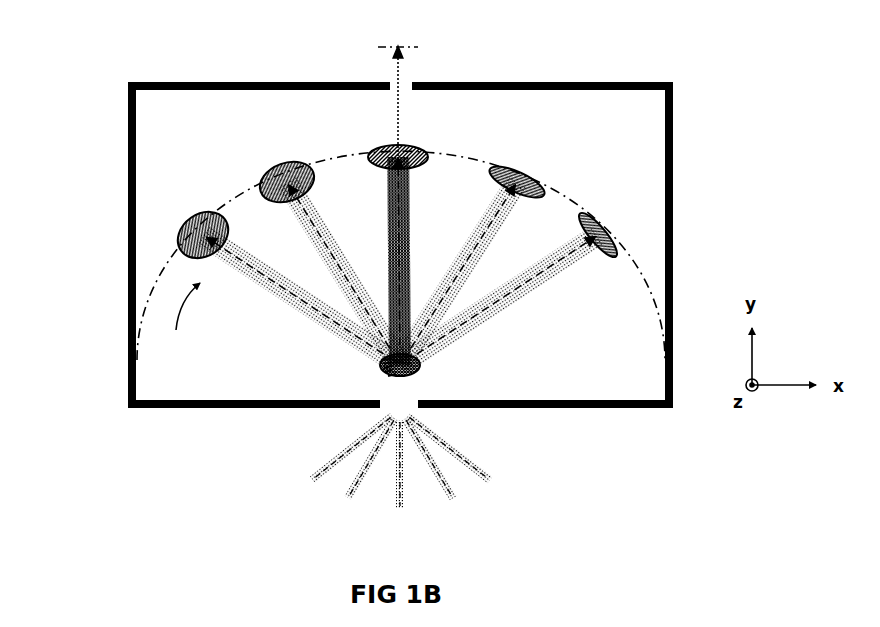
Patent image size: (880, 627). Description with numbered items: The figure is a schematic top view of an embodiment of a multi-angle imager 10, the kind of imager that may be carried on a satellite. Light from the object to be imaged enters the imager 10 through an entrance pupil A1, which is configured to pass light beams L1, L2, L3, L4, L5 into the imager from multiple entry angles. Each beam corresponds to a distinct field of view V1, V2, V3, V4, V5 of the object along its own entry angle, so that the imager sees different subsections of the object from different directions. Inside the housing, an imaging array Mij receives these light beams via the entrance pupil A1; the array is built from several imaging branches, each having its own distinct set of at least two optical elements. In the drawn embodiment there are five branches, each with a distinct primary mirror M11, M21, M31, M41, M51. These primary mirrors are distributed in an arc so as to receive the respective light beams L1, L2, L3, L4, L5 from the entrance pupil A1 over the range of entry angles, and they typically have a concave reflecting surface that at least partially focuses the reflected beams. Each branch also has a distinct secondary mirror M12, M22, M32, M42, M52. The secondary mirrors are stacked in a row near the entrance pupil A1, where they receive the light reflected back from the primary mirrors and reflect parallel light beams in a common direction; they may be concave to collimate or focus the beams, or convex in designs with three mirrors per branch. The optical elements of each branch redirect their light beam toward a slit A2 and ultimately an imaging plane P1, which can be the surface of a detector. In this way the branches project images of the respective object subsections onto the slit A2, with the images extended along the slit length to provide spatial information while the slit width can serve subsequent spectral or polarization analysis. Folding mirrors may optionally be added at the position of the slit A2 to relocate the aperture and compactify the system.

The multi-angle imager 10 is at (84, 144).
The entrance pupil A1 is at (412, 428).
The slit A2 is at (429, 112).
The imaging plane P1 is at (372, 47).
The primary mirror M11 is at (193, 230).
The primary mirror M21 is at (282, 174).
The primary mirror M31 is at (386, 148).
The primary mirror M41 is at (517, 176).
The primary mirror M51 is at (607, 233).
The secondary mirror M12 is at (378, 363).
The secondary mirror M22 is at (378, 366).
The secondary mirror M32 is at (378, 369).
The secondary mirror M42 is at (378, 372).
The secondary mirror M52 is at (380, 375).
The imaging array Mij is at (220, 357).
The light beam L1 is at (284, 295).
The light beam L2 is at (342, 251).
The light beam L3 is at (412, 224).
The light beam L4 is at (497, 247).
The light beam L5 is at (549, 292).
The field of view V1 is at (462, 458).
The field of view V2 is at (437, 474).
The field of view V3 is at (402, 481).
The field of view V4 is at (364, 473).
The field of view V5 is at (339, 458).